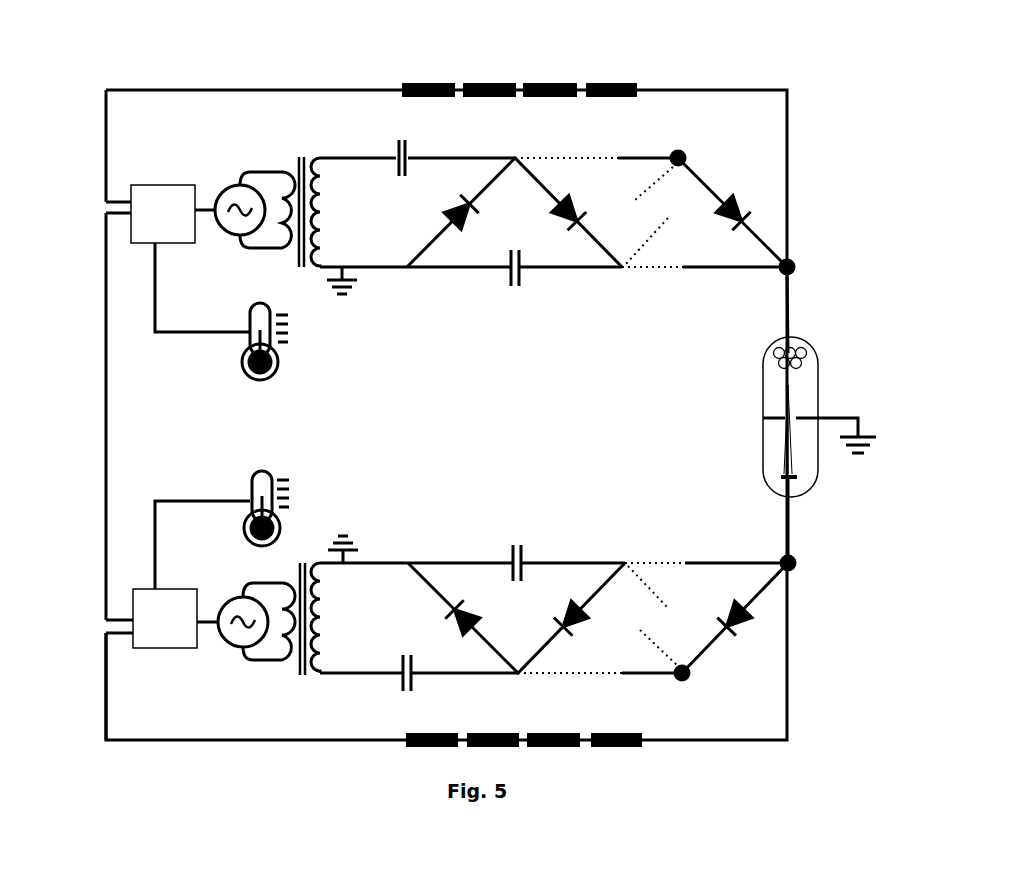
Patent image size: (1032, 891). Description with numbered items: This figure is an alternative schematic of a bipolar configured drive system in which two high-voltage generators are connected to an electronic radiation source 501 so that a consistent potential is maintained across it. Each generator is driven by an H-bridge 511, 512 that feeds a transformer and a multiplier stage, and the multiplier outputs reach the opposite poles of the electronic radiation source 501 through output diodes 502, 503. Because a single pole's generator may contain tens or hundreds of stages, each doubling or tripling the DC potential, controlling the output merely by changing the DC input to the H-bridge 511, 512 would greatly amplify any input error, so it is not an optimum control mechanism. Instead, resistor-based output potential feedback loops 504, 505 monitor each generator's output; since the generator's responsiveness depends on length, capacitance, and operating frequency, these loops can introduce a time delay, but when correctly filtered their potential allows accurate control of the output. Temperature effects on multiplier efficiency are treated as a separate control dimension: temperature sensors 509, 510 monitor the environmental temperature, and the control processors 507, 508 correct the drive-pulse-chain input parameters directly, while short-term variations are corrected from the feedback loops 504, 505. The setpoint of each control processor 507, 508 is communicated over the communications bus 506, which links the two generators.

The electronic radiation source 501 is at (805, 383).
The output diode 502 is at (707, 182).
The output diode 503 is at (707, 648).
The output potential feedback loop 504 is at (637, 94).
The output potential feedback loop 505 is at (642, 744).
The communications bus 506 is at (106, 403).
The control processor 507 is at (163, 214).
The control processor 508 is at (165, 618).
The temperature sensor 509 is at (247, 311).
The temperature sensor 510 is at (249, 530).
The H-bridge 511 is at (217, 210).
The H-bridge 512 is at (248, 638).